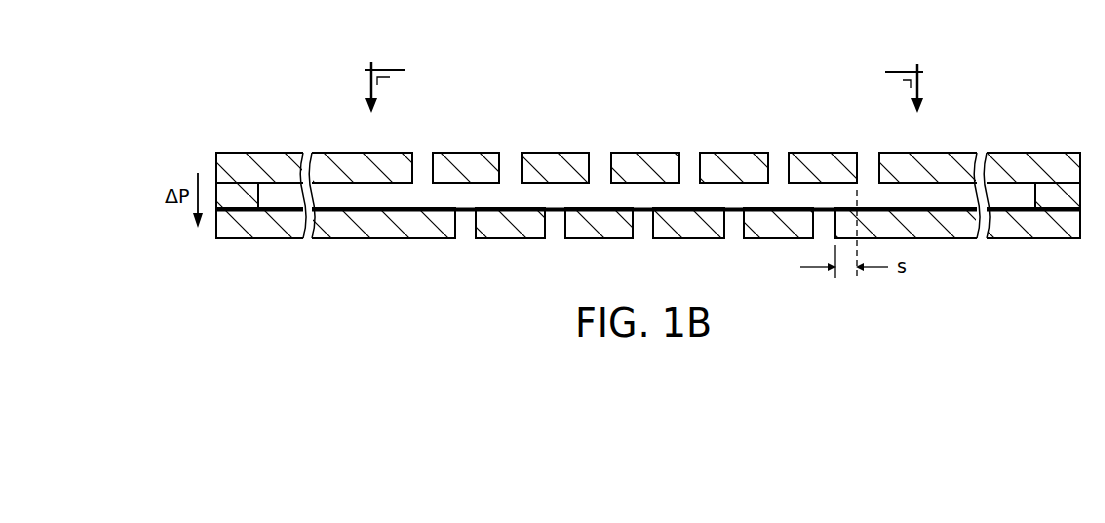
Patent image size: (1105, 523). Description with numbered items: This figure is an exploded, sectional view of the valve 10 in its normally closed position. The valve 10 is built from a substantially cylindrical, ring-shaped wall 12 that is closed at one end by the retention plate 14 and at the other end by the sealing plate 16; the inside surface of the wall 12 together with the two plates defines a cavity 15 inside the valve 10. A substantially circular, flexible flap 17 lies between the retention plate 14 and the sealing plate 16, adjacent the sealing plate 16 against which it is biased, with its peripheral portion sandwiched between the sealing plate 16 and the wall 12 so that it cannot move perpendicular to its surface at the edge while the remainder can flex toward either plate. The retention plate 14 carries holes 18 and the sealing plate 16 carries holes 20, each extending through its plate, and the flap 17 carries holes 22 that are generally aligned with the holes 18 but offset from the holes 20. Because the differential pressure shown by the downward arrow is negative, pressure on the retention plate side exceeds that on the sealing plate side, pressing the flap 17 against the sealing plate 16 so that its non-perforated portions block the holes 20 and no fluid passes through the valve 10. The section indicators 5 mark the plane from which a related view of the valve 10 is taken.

The section line 5- 5 is at (644, 75).
The valve 10 is at (759, 93).
The wall 12 is at (1047, 188).
The retention plate 14 is at (265, 158).
The cavity 15 is at (790, 195).
The sealing plate 16 is at (248, 231).
The flap 17 is at (325, 203).
The holes 18 is at (422, 158).
The holes 20 is at (465, 233).
The holes 22 is at (687, 205).